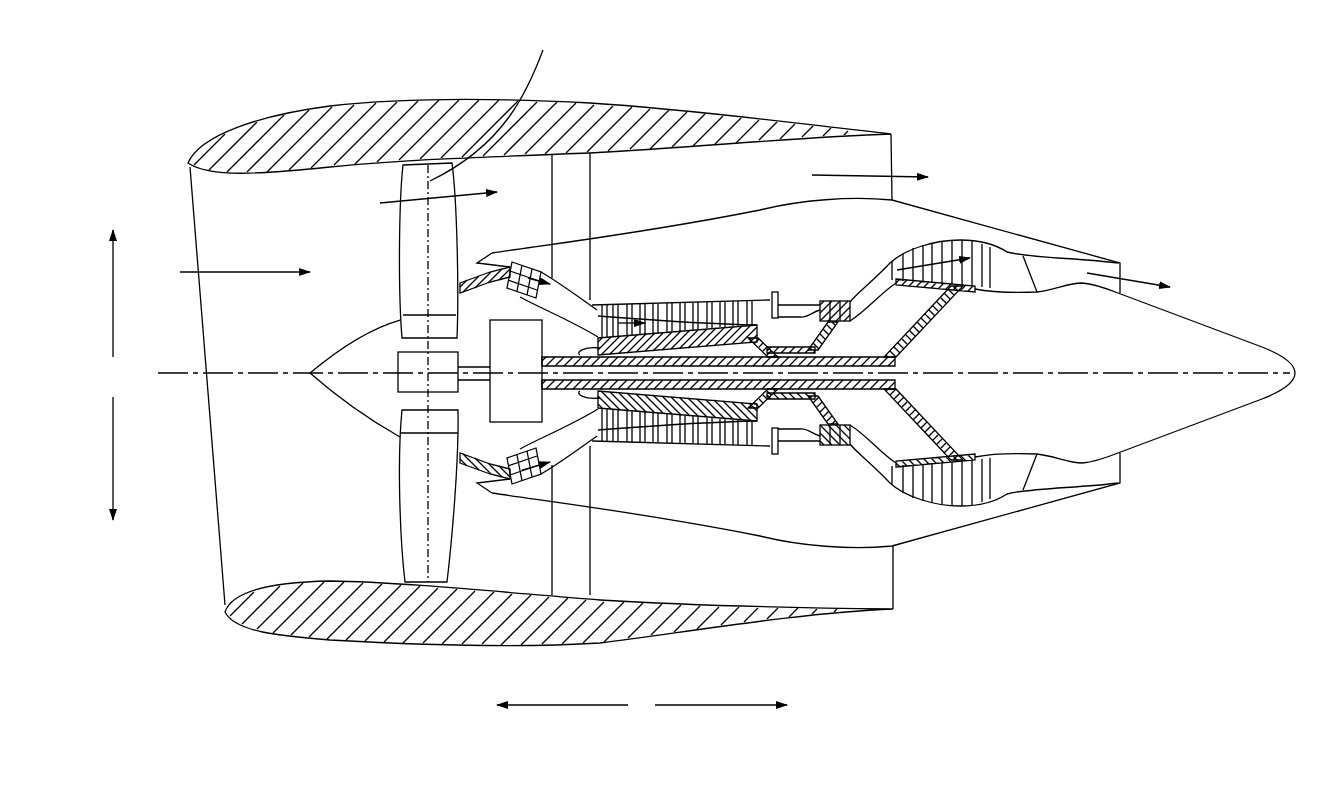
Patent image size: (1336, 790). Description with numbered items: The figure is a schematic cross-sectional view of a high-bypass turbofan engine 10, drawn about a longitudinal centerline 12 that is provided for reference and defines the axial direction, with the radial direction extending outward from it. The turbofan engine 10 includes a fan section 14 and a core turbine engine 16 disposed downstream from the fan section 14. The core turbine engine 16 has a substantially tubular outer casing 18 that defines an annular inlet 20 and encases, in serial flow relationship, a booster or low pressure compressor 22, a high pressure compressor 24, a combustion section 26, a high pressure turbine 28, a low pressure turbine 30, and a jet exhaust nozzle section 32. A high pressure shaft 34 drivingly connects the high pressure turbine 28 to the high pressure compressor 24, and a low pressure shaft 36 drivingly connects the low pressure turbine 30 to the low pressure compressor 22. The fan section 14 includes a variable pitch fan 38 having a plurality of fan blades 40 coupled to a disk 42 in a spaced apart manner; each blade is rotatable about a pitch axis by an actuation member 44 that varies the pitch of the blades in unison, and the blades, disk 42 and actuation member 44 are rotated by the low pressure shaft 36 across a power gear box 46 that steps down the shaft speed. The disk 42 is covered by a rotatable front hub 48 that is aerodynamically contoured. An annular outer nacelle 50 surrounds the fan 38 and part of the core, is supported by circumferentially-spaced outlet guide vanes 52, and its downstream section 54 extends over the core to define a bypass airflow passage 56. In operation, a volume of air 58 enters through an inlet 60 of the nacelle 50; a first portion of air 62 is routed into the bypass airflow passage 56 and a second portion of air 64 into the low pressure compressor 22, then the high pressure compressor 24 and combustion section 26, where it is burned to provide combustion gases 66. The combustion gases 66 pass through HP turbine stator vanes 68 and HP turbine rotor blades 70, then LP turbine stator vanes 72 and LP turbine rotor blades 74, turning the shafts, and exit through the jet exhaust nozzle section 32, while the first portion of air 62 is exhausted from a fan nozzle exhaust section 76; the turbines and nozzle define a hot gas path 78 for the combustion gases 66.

The turbofan engine 10 is at (1038, 113).
The longitudinal centerline 12 is at (1060, 373).
The fan section 14 is at (357, 188).
The core turbine engine 16 is at (710, 253).
The outer casing 18 is at (747, 541).
The annular inlet 20 is at (478, 483).
The low pressure compressor 22 is at (558, 448).
The high pressure compressor 24 is at (622, 440).
The combustion section 26 is at (793, 438).
The high pressure turbine 28 is at (868, 447).
The low pressure turbine 30 is at (977, 502).
The jet exhaust nozzle section 32 is at (1037, 482).
The high pressure shaft 34 is at (832, 324).
The low pressure shaft 36 is at (876, 360).
The variable pitch fan 38 is at (365, 428).
The fan blades 40 is at (398, 523).
The disk 42 is at (418, 327).
The actuation member 44 is at (345, 341).
The power gear box 46 is at (590, 305).
The rotatable front hub 48 is at (323, 390).
The outer nacelle 50 is at (447, 648).
The outlet guide vanes 52 is at (592, 180).
The downstream section of the nacelle 54 is at (841, 132).
The bypass airflow passage 56 is at (740, 191).
The volume of air 58 is at (243, 268).
The inlet 60 is at (220, 583).
The first portion of air 62 is at (427, 180).
The second portion of air 64 is at (485, 262).
The combustion gases 66 is at (933, 262).
The HP turbine stator vanes 68 is at (808, 440).
The HP turbine rotor blades 70 is at (820, 433).
The LP turbine stator vanes 72 is at (903, 484).
The LP turbine rotor blades 74 is at (910, 494).
The fan nozzle exhaust section 76 is at (884, 160).
The hot gas path 78 is at (873, 277).